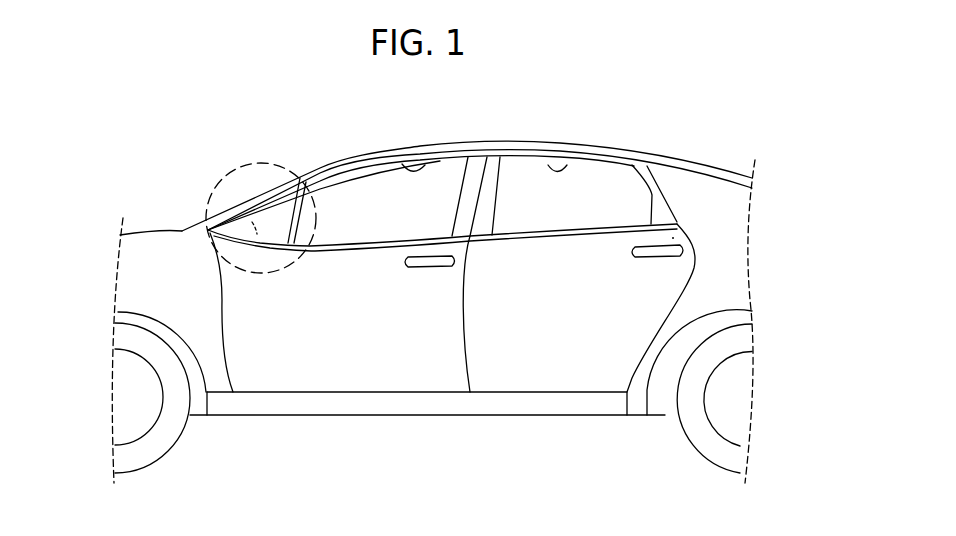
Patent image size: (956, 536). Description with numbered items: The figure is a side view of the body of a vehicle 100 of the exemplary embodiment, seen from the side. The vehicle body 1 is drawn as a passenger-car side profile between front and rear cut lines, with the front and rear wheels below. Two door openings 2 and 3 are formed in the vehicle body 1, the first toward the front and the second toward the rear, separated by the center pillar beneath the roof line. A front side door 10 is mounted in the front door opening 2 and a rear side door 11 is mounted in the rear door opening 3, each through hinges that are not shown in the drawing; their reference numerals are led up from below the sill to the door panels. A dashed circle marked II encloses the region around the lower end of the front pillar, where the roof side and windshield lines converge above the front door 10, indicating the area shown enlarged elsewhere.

The vehicle 100 is at (642, 137).
The vehicle body 1 is at (478, 146).
The door opening 2 is at (422, 158).
The door opening 3 is at (564, 152).
The front side door 10 is at (358, 333).
The rear side door 11 is at (550, 333).
The enlarged region II is at (249, 160).